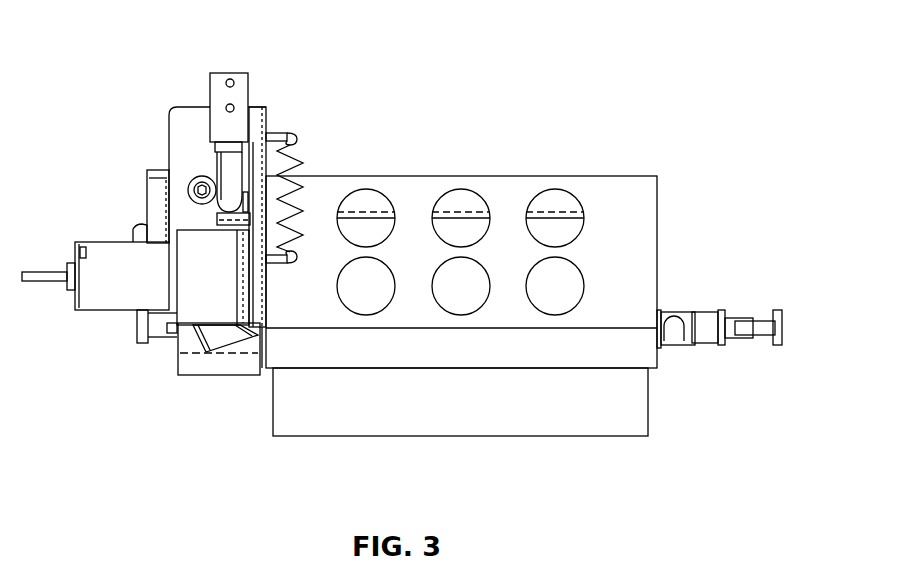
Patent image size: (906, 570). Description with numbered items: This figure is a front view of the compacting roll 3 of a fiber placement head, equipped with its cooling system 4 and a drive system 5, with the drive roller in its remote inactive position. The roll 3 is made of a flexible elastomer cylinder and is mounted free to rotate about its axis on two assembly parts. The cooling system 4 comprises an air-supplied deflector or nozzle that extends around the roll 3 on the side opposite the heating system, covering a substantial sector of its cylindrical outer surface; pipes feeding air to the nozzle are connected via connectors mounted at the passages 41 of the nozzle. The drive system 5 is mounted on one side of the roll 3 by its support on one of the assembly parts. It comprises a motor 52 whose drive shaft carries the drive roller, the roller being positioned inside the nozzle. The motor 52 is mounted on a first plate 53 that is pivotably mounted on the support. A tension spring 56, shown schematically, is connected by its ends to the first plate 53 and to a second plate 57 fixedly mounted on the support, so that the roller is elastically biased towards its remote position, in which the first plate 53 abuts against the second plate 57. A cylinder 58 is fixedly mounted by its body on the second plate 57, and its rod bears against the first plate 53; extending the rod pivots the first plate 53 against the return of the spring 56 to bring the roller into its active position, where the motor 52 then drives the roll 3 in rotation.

The roll 3 is at (618, 437).
The cooling system 4 is at (605, 170).
The passages 41 is at (450, 190).
The drive system 5 is at (162, 158).
The motor 52 is at (88, 312).
The first plate 53 is at (255, 295).
The tension spring 56 is at (298, 152).
The second plate 57 is at (265, 118).
The cylinder 58 is at (218, 78).